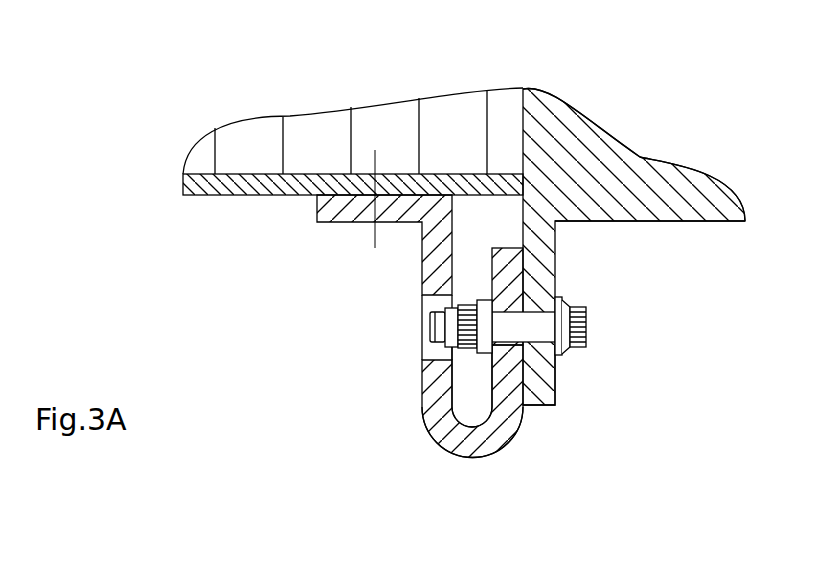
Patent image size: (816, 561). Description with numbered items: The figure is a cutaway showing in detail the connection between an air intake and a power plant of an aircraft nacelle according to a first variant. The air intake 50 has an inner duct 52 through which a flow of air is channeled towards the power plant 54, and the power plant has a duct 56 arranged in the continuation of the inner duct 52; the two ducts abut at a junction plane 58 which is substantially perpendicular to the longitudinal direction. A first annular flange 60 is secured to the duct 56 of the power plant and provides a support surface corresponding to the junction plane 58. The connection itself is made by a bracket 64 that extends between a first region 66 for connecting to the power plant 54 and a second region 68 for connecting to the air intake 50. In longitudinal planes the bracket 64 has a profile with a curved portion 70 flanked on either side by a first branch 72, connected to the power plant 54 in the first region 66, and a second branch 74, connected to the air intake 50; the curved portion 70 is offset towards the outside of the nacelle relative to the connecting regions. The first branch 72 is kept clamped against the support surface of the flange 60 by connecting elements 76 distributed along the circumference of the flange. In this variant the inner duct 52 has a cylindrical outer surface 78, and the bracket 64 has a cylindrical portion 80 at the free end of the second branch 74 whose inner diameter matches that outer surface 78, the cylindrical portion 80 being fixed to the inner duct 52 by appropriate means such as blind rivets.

The air intake 50 is at (272, 105).
The inner duct 52 is at (386, 91).
The power plant 54 is at (706, 242).
The duct 56 is at (641, 157).
The junction plane 58 is at (543, 121).
The first annular flange 60 is at (555, 369).
The bracket 64 is at (401, 399).
The first region 66 is at (539, 394).
The second region 68 is at (358, 242).
The curved portion 70 is at (480, 478).
The first branch 72 is at (518, 265).
The second branch 74 is at (421, 269).
The connecting elements 76 is at (608, 327).
The cylindrical outer surface 78 is at (210, 197).
The cylindrical portion 80 is at (323, 213).